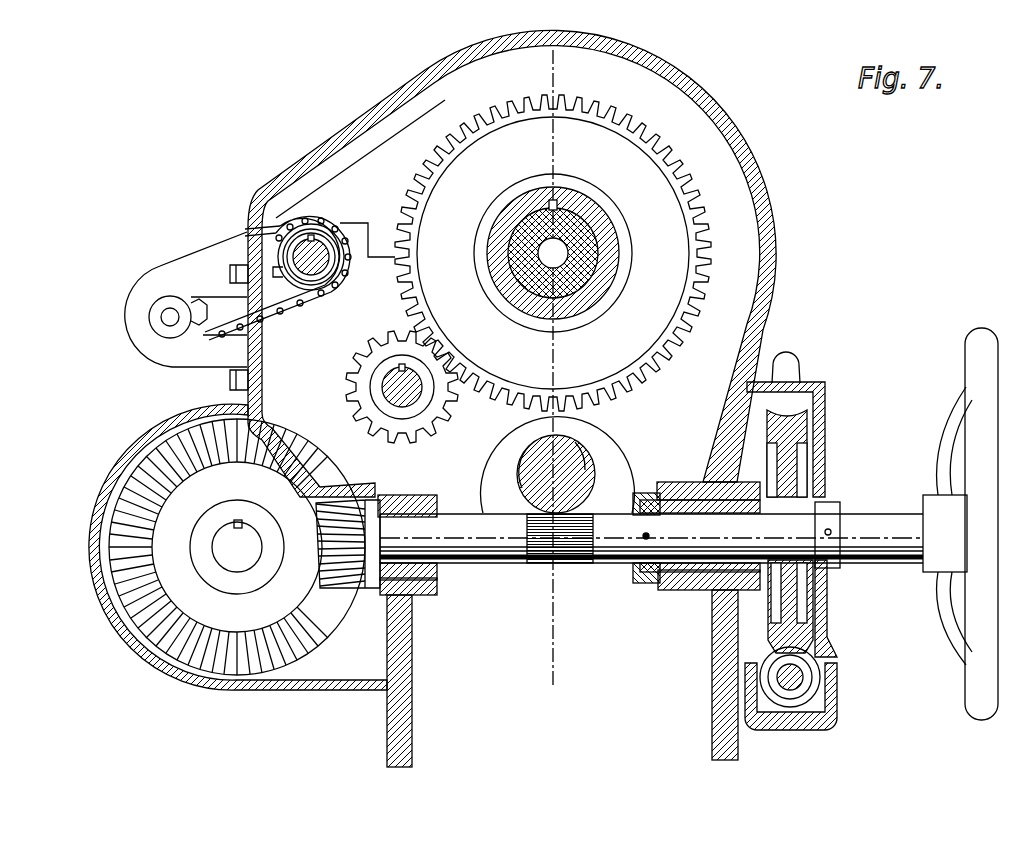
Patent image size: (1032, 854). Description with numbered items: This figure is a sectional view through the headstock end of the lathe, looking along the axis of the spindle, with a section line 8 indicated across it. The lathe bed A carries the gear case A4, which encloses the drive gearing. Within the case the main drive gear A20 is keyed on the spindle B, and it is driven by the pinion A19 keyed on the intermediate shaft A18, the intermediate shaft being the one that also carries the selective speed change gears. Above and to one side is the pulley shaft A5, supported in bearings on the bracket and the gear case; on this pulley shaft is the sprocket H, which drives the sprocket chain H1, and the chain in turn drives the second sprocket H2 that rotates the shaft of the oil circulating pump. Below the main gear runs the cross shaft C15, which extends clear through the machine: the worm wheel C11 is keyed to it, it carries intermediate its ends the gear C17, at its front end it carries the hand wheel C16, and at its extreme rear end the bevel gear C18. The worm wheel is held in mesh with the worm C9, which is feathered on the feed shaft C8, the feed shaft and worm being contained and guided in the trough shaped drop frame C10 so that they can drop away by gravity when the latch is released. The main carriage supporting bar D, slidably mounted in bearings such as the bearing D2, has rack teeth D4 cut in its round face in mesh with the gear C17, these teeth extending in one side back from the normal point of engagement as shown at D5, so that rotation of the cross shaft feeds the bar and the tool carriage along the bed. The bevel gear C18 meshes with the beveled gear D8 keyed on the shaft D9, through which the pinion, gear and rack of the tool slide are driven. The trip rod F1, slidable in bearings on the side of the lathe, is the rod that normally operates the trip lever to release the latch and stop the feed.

The lathe bed A is at (720, 706).
The gear case A4 is at (760, 172).
The main drive gear A20 is at (713, 249).
The pinion A19 is at (367, 381).
The intermediate shaft A18 is at (410, 397).
The pulley shaft A5 is at (338, 270).
The spindle B is at (548, 250).
The sprocket H is at (312, 240).
The sprocket chain H1 is at (277, 313).
The second sprocket H2 is at (163, 318).
The main carriage supporting bar D is at (522, 447).
The bearing D2 is at (617, 462).
The rack teeth D4 is at (517, 487).
The extension of rack teeth D5 is at (574, 466).
The beveled gear D8 is at (323, 637).
The shaft D9 is at (227, 537).
The cross shaft C15 is at (502, 530).
The gear C17 is at (578, 547).
The bevel gear C18 is at (332, 537).
The worm wheel C11 is at (807, 417).
The hand wheel C16 is at (972, 346).
The feed shaft C8 is at (803, 677).
The worm C9 is at (800, 690).
The trough shaped drop frame C10 is at (822, 722).
The trip rod F1 is at (797, 352).
The section line 8- 8 is at (562, 674).